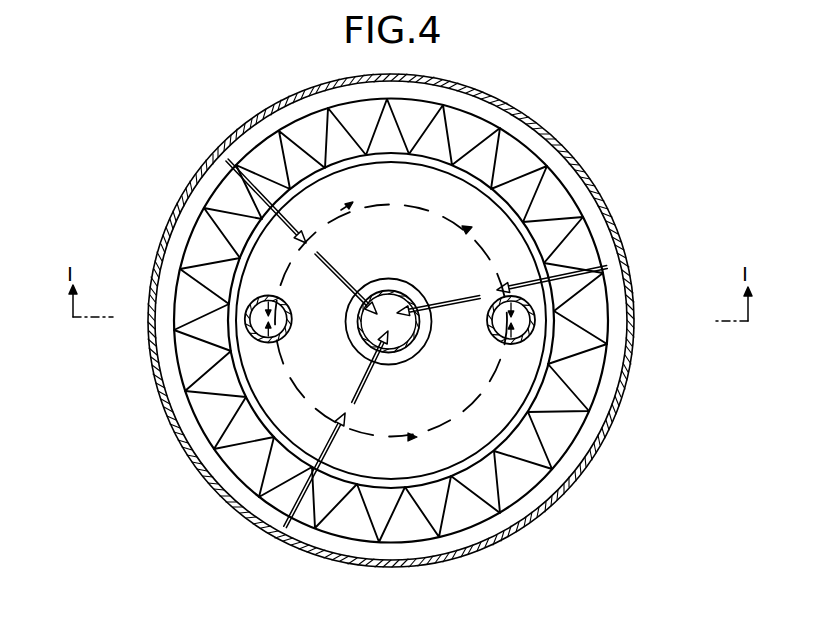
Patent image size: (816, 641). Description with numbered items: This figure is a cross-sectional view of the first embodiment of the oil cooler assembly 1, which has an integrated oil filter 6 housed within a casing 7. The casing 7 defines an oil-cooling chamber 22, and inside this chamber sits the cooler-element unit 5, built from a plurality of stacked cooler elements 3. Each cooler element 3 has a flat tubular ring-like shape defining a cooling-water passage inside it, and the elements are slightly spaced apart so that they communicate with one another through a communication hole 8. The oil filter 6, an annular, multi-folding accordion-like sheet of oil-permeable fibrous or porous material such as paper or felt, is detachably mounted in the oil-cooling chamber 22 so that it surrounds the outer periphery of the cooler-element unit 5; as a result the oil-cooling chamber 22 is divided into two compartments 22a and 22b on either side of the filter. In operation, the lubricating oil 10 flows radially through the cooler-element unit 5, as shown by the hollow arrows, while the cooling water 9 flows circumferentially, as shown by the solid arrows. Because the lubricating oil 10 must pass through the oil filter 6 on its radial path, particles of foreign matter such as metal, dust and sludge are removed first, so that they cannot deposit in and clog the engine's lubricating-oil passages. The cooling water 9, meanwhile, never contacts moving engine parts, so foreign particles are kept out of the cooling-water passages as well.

The oil cooler assembly 1 is at (583, 166).
The casing 7 is at (632, 303).
The compartment 22a is at (177, 247).
The compartment 22b is at (207, 220).
The oil filter 6 is at (567, 381).
The cooler element 3 is at (497, 412).
The cooler-element unit 5 is at (460, 320).
The cooling water 9 is at (447, 229).
The lubricating oil 10 is at (292, 216).
The communication hole 8 is at (270, 340).
The oil-cooling chamber 22 is at (215, 173).